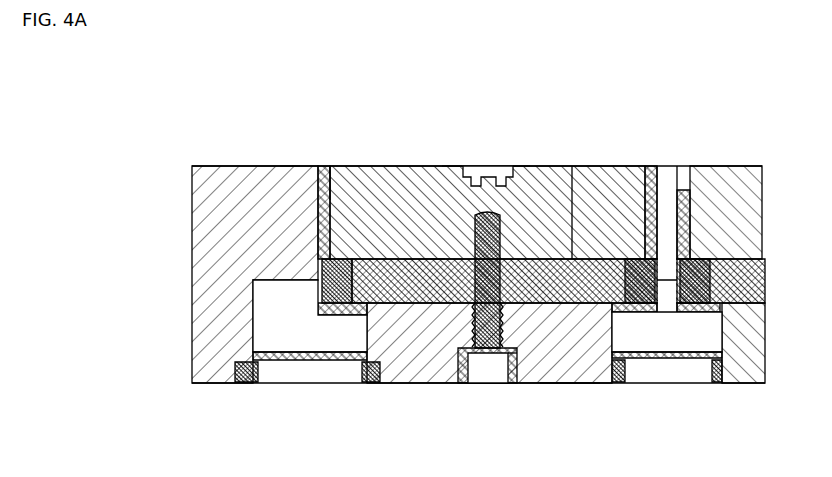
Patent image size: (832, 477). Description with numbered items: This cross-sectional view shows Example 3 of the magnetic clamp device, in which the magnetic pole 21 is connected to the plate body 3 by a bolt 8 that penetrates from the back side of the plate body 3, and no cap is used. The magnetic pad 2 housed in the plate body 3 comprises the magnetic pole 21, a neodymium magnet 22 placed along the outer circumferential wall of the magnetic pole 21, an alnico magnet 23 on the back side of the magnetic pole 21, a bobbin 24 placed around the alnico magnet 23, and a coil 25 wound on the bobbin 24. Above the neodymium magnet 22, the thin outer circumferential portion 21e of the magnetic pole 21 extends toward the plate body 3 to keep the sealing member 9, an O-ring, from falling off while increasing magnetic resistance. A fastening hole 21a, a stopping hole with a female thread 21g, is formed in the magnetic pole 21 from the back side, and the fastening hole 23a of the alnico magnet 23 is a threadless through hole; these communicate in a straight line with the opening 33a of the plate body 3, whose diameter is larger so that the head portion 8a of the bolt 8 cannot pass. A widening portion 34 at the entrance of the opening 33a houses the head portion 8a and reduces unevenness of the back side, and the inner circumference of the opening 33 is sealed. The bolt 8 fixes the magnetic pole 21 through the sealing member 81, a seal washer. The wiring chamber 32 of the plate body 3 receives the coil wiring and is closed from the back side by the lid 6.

The magnetic pad 2 is at (459, 166).
The plate body 3 is at (262, 168).
The lid 6 is at (290, 365).
The bolt 8 is at (465, 381).
The head portion 8a is at (499, 383).
The sealing member 9 is at (291, 166).
The magnetic pole 21 is at (393, 166).
The fastening hole 21a is at (442, 192).
The outer circumferential portion 21e is at (325, 182).
The female thread 21g is at (505, 212).
The neodymium magnet 22 is at (332, 207).
The alnico magnet 23 is at (572, 167).
The fastening hole 23a is at (438, 258).
The bobbin 24 is at (693, 222).
The coil 25 is at (648, 312).
The wiring chamber 32 is at (271, 337).
The opening 33 is at (470, 322).
The opening 33a is at (462, 346).
The widening portion 34 is at (511, 382).
The sealing member 81 is at (568, 381).